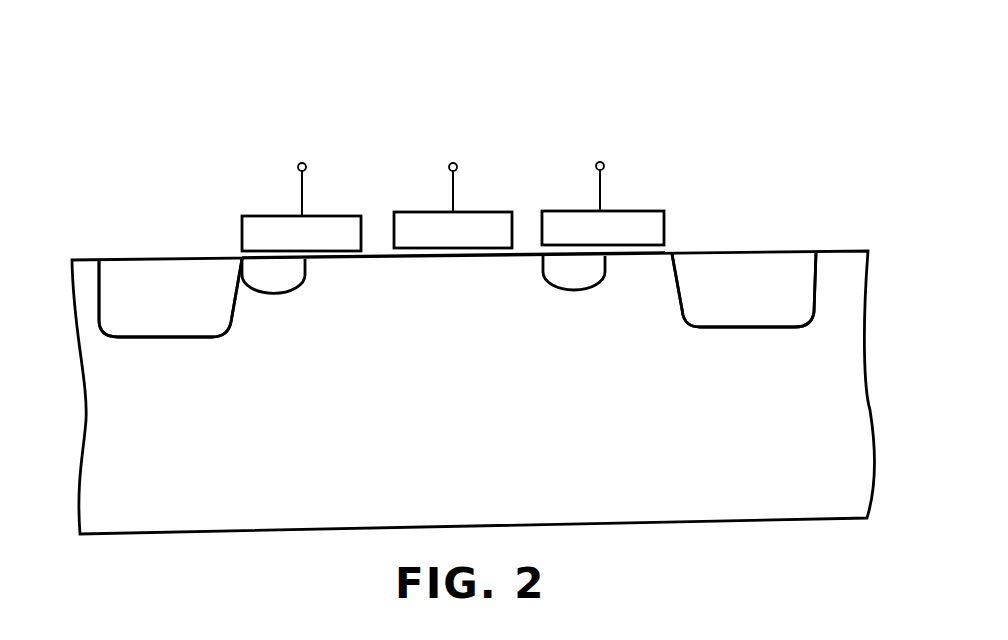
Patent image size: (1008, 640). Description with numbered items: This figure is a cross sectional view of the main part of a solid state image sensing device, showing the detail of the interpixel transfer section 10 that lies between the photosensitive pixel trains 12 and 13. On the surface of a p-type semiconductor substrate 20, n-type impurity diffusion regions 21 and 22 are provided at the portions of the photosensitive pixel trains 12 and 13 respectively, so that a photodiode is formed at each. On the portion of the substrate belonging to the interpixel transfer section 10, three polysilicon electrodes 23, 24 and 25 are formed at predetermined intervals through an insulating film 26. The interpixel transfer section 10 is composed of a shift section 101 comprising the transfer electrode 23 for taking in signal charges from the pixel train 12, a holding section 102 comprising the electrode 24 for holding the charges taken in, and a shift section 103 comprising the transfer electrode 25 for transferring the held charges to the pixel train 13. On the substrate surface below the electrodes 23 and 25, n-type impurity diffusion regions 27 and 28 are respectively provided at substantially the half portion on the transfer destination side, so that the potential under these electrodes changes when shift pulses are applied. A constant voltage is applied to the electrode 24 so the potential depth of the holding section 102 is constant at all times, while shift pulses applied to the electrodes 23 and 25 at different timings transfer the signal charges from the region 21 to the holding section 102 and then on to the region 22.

The interpixel transfer section 10 is at (660, 55).
The shift section 101 is at (616, 151).
The holding section 102 is at (462, 152).
The shift section 103 is at (315, 154).
The photosensitive pixel train 12 is at (790, 87).
The photosensitive pixel train 13 is at (182, 95).
The p-type semiconductor substrate 20 is at (760, 503).
The n-type impurity diffusion region 21 is at (772, 262).
The n-type impurity diffusion region 22 is at (149, 275).
The electrode 23 is at (627, 220).
The electrode 24 is at (463, 220).
The electrode 25 is at (320, 222).
The insulating film 26 is at (665, 250).
The n-type impurity diffusion region 27 is at (575, 283).
The n-type impurity diffusion region 28 is at (277, 287).